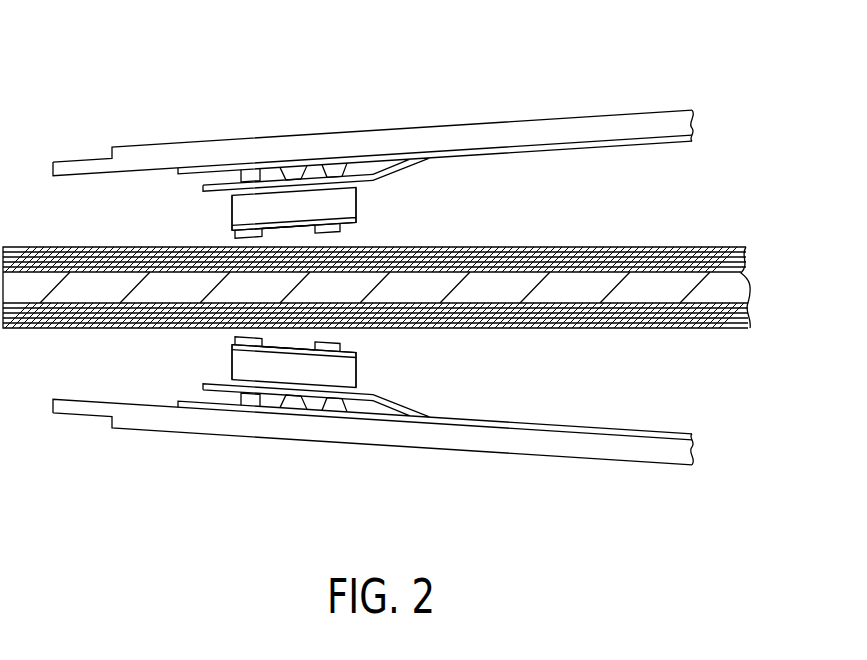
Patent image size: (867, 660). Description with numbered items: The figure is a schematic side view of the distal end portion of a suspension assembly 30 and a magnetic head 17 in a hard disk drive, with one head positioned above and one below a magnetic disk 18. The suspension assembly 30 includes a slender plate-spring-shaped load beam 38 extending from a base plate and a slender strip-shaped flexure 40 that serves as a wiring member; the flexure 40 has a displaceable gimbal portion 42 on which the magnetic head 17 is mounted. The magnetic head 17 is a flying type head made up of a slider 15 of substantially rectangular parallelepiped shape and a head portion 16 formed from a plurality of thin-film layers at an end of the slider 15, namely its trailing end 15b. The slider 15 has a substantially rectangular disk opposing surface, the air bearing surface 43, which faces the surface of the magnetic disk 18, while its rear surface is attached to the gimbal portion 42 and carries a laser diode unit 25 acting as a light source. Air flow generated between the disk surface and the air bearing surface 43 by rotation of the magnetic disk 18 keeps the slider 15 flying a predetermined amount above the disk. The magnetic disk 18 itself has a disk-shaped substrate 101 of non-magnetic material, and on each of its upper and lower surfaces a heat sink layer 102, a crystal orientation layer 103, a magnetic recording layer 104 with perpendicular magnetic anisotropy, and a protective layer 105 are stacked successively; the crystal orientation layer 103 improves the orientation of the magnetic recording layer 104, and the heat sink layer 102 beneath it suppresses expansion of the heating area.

The slider 15 is at (316, 200).
The trailing end 15b is at (231, 208).
The head portion 16 is at (243, 240).
The magnetic head 17 is at (358, 201).
The magnetic disk 18 is at (690, 231).
The laser diode unit 25 is at (252, 168).
The suspension assembly 30 is at (472, 118).
The load beam 38 is at (557, 128).
The flexure 40 is at (565, 150).
The gimbal portion 42 is at (347, 169).
The air bearing surface 43 is at (294, 233).
The substrate 101 is at (622, 293).
The heat sink layer 102 is at (752, 279).
The crystal orientation layer 103 is at (660, 262).
The magnetic recording layer 104 is at (722, 255).
The protective layer 105 is at (608, 250).